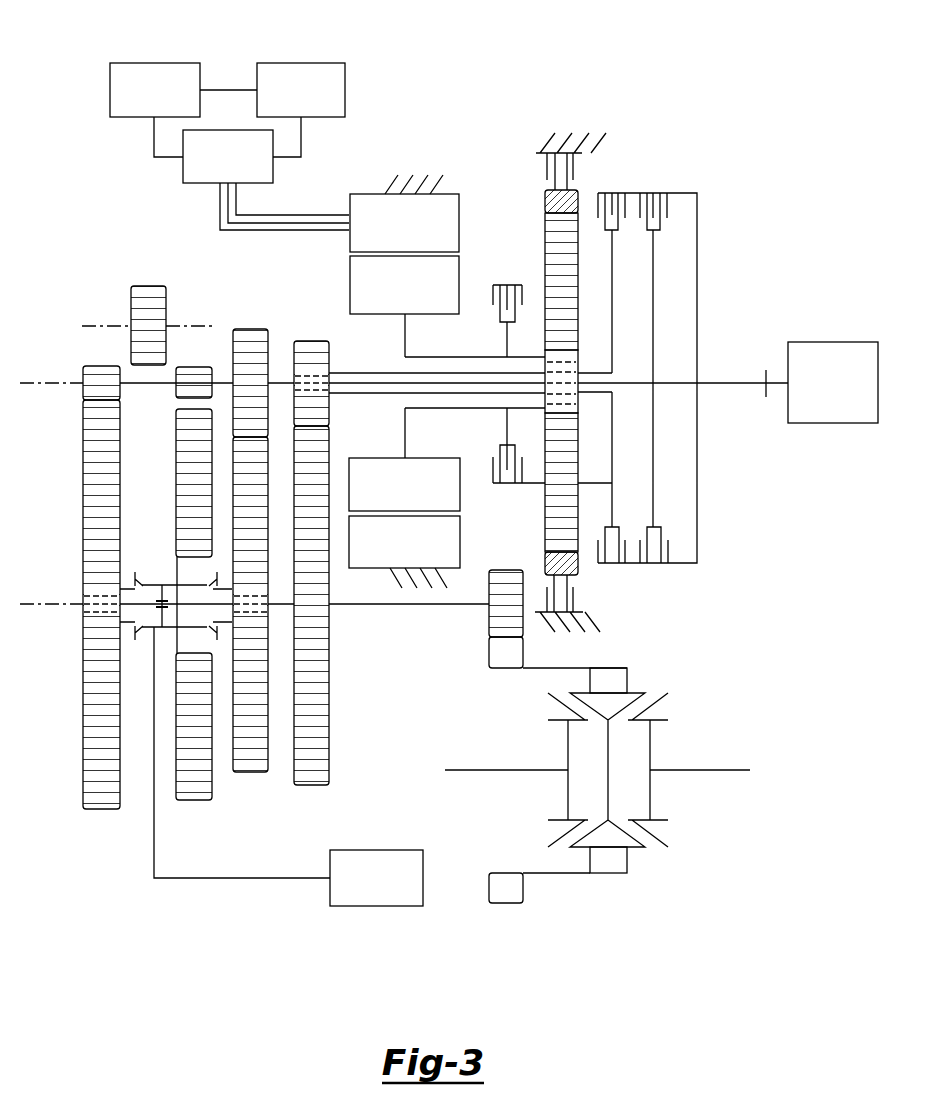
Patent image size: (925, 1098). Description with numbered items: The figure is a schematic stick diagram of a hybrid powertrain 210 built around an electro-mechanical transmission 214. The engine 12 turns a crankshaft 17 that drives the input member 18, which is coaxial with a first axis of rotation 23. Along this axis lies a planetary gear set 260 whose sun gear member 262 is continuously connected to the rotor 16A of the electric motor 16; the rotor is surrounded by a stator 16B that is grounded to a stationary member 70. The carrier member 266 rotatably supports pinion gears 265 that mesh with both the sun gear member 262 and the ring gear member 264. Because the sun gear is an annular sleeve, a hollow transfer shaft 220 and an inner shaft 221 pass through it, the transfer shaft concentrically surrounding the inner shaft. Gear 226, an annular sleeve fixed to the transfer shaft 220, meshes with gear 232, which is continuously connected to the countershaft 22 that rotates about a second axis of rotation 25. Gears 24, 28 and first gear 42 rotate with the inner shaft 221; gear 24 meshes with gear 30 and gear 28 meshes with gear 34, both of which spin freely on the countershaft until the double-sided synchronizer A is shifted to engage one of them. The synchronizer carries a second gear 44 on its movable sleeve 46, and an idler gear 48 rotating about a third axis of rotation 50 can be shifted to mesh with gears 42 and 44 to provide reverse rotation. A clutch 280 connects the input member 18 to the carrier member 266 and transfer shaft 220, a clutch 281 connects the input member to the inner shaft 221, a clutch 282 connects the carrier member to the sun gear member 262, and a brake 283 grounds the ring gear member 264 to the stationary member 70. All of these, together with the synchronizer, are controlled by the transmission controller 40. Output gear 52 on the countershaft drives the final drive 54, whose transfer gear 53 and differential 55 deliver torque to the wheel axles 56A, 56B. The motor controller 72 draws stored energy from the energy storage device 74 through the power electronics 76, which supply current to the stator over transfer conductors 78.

The engine 12 is at (835, 342).
The electric motor 16 is at (364, 275).
The rotor 16A is at (404, 285).
The stator 16B is at (404, 223).
The crankshaft 17 is at (770, 398).
The input member 18 is at (740, 383).
The countershaft 22 is at (362, 607).
The first axis of rotation 23 is at (28, 383).
The gear 24 is at (90, 366).
The second axis of rotation 25 is at (40, 604).
The gear 28 is at (250, 329).
The gear 30 is at (83, 447).
The gear 34 is at (268, 482).
The transmission controller 40 is at (378, 850).
The first gear 42 is at (198, 367).
The second gear 44 is at (177, 490).
The movable sleeve 46 is at (148, 630).
The idler gear 48 is at (131, 300).
The third axis of rotation 50 is at (100, 326).
The output member 52 is at (489, 630).
The transfer gear 53 is at (489, 657).
The final drive 54 is at (674, 658).
The differential 55 is at (650, 848).
The wheel axle 56A is at (477, 770).
The wheel axle 56B is at (713, 770).
The stationary member 70 is at (392, 184).
The motor controller 72 is at (305, 63).
The energy storage device 74 is at (160, 63).
The power electronics 76 is at (183, 172).
The transfer conductors 78 is at (305, 215).
The powertrain 210 is at (685, 328).
The electro-mechanical transmission 214 is at (595, 328).
The transfer shaft 220 is at (392, 393).
The inner shaft 221 is at (353, 373).
The gear 226 is at (314, 341).
The gear 232 is at (329, 720).
The planetary gear set 260 is at (578, 380).
The sun gear member 262 is at (580, 418).
The ring gear member 264 is at (545, 202).
The pinion gears 265 is at (578, 351).
The carrier member 266 is at (528, 485).
The clutch 280 is at (628, 238).
The clutch 281 is at (667, 238).
The clutch 282 is at (517, 312).
The brake 283 is at (587, 172).
The synchronizer A is at (160, 582).